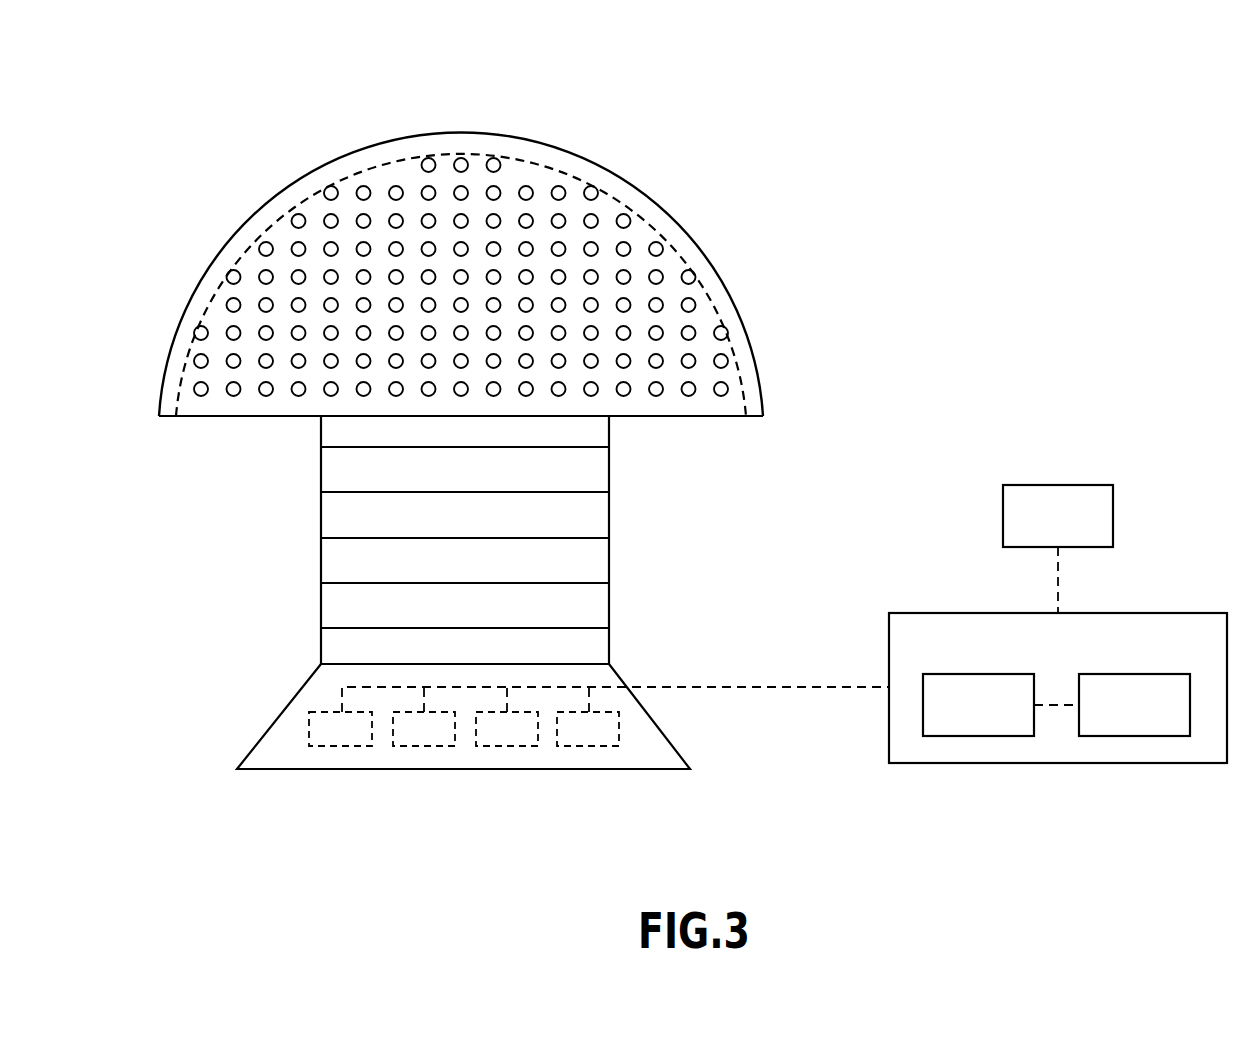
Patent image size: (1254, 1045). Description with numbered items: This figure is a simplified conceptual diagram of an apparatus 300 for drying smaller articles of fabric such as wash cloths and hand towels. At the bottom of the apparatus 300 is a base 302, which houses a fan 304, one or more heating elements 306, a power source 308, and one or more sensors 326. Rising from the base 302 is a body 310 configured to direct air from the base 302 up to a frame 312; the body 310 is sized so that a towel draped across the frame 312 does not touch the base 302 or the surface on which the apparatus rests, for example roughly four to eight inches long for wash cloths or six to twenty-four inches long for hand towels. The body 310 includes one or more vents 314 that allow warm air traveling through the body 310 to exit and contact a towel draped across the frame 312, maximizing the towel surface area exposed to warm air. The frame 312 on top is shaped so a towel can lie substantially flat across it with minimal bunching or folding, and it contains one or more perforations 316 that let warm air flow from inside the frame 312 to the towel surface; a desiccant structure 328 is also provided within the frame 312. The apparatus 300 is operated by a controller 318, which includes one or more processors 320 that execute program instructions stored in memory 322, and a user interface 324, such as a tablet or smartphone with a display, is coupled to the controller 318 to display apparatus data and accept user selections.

The apparatus 300 is at (211, 72).
The base 302 is at (283, 712).
The fan 304 is at (357, 740).
The heating elements 306 is at (441, 740).
The power source 308 is at (524, 740).
The body 310 is at (229, 526).
The frame 312 is at (238, 222).
The vents 314 is at (618, 493).
The perforations 316 is at (657, 192).
The controller 318 is at (931, 642).
The processors 320 is at (960, 716).
The memory 322 is at (1117, 716).
The user interface 324 is at (1040, 529).
The sensors 326 is at (605, 740).
The desiccant structure 328 is at (718, 293).